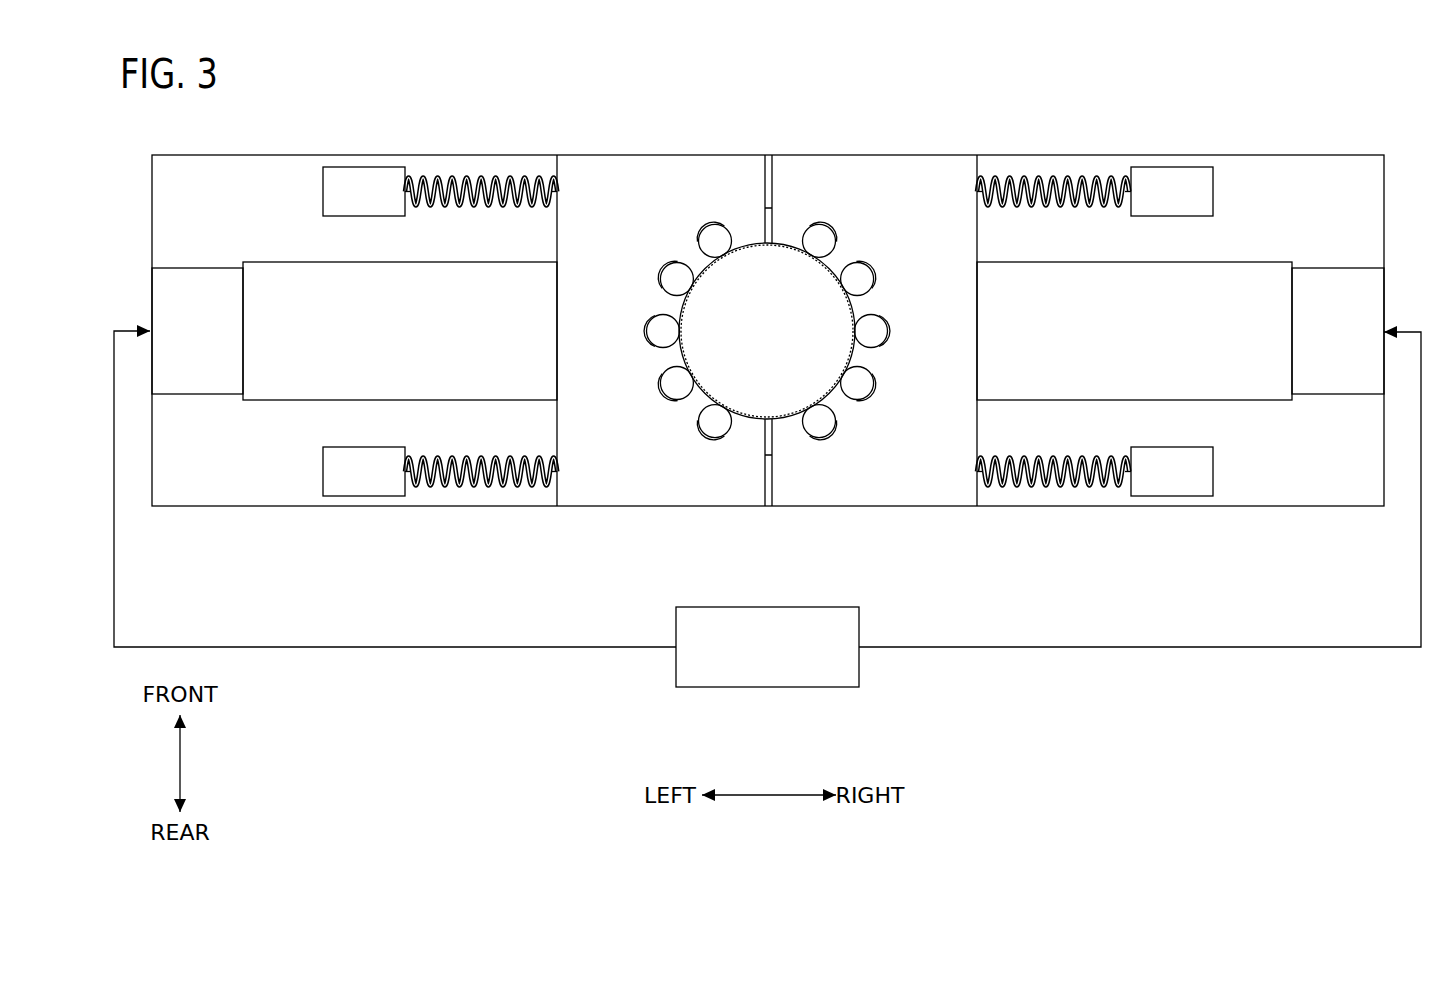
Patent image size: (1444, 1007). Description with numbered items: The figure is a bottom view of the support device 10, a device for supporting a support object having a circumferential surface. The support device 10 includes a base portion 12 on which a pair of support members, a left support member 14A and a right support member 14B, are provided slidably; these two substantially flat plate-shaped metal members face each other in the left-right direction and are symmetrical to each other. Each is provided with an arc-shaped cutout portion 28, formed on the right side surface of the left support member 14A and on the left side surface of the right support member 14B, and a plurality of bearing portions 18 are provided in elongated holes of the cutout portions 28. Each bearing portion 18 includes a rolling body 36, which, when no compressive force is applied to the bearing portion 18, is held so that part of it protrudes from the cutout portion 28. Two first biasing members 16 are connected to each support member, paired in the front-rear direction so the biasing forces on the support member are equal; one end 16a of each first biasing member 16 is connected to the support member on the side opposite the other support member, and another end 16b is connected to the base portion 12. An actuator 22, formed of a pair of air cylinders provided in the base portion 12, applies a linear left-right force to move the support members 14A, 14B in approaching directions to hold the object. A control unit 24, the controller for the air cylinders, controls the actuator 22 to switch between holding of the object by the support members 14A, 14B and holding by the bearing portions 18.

The support device 10 is at (270, 143).
The base portion 12 is at (1292, 167).
The left support member 14A is at (682, 168).
The right support member 14B is at (900, 168).
The first biasing member 16 is at (488, 180).
The one end of first biasing member 16a is at (550, 170).
The another end of first biasing member 16b is at (411, 170).
The bearing portion 18 is at (702, 237).
The actuator 22 is at (198, 262).
The control unit 24 is at (733, 607).
The cutout portion 28 is at (752, 237).
The rolling body 36 is at (695, 283).